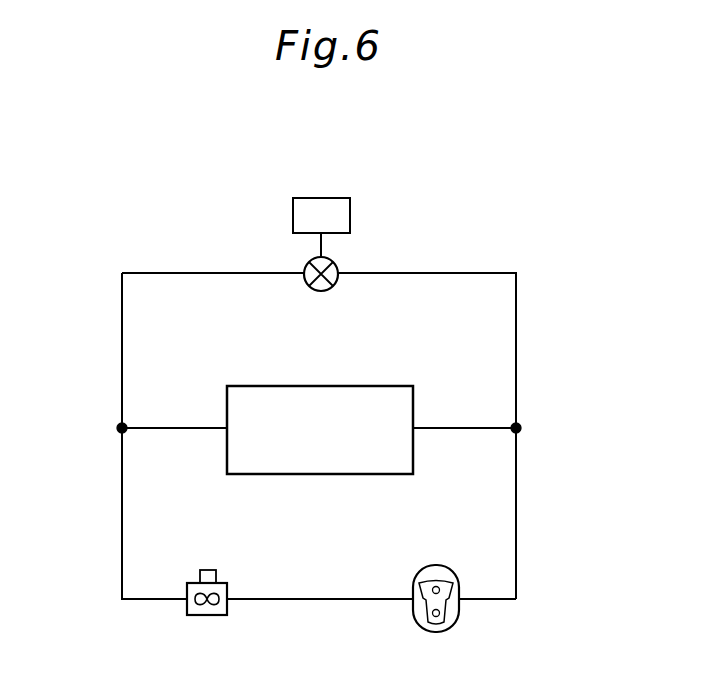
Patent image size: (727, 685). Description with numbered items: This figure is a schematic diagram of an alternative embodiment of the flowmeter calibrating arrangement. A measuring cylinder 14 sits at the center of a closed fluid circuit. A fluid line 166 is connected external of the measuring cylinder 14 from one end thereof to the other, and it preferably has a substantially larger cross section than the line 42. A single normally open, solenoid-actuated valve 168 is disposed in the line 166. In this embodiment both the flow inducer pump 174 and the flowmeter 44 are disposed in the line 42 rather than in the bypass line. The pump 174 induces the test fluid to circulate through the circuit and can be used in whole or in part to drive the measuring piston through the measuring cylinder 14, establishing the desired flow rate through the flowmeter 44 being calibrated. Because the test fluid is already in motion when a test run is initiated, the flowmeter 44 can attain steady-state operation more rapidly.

The measuring cylinder 14 is at (385, 386).
The line 42 is at (516, 500).
The flowmeter 44 is at (229, 588).
The fluid line 166 is at (516, 344).
The normally open solenoid-actuated valve 168 is at (336, 266).
The flow inducer pump 174 is at (441, 566).